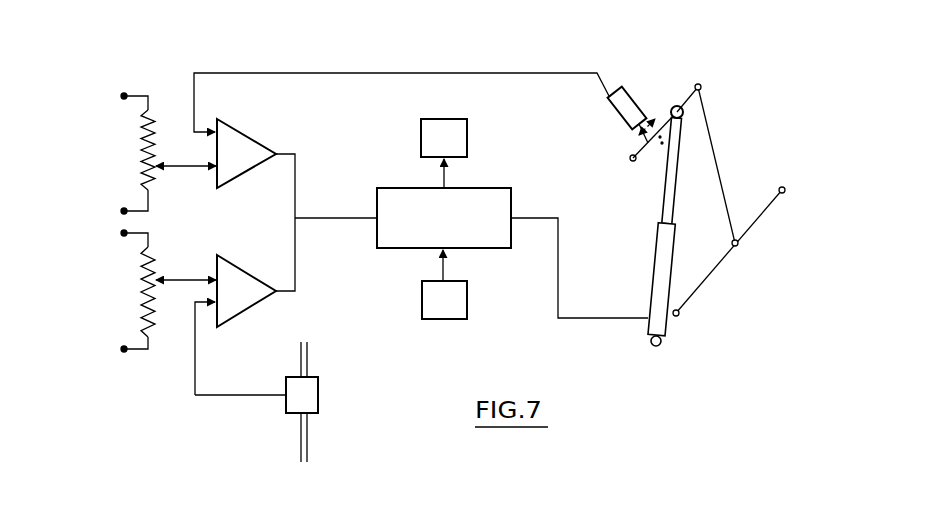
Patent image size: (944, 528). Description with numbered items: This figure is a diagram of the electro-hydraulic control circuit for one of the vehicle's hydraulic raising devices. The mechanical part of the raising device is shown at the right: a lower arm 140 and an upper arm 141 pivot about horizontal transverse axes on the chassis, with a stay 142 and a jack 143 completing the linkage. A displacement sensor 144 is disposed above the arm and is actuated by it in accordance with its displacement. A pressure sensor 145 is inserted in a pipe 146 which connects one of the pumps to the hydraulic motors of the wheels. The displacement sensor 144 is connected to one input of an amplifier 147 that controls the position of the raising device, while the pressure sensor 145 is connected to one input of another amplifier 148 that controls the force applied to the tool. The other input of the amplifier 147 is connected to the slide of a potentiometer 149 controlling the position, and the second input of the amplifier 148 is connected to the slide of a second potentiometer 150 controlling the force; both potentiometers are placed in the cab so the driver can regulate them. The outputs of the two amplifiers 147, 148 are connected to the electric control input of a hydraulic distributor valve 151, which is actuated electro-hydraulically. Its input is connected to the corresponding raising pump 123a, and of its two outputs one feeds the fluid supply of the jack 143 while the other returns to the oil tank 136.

The raising pump 123a is at (450, 306).
The oil tank 136 is at (455, 141).
The lower arm 140 is at (683, 94).
The upper arm 141 is at (705, 284).
The stay 142 is at (721, 176).
The jack 143 is at (664, 242).
The displacement sensor 144 is at (631, 116).
The pressure sensor 145 is at (310, 395).
The pipe 146 is at (300, 357).
The amplifier 147 is at (233, 142).
The amplifier 148 is at (242, 287).
The potentiometer 149 is at (150, 152).
The second potentiometer 150 is at (150, 331).
The hydraulic distributor valve 151 is at (462, 199).